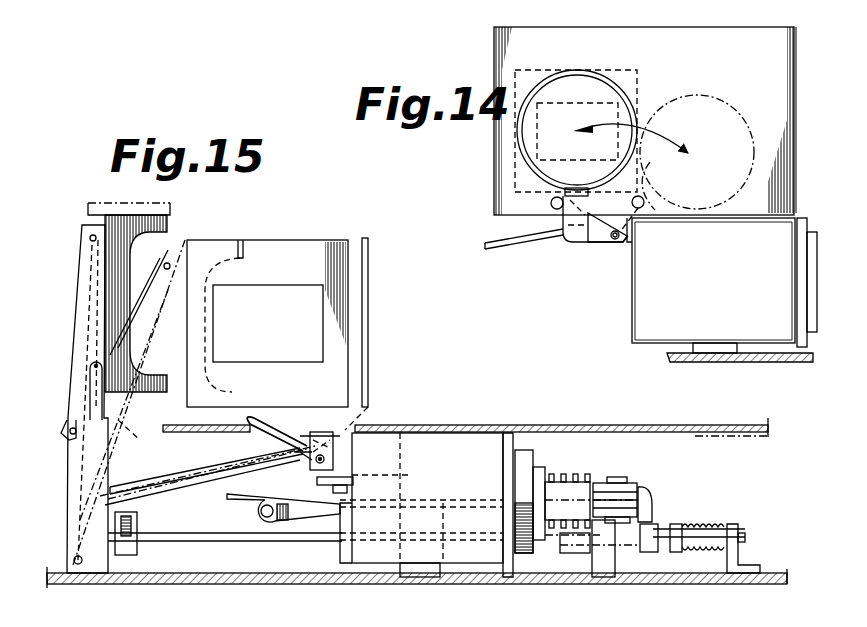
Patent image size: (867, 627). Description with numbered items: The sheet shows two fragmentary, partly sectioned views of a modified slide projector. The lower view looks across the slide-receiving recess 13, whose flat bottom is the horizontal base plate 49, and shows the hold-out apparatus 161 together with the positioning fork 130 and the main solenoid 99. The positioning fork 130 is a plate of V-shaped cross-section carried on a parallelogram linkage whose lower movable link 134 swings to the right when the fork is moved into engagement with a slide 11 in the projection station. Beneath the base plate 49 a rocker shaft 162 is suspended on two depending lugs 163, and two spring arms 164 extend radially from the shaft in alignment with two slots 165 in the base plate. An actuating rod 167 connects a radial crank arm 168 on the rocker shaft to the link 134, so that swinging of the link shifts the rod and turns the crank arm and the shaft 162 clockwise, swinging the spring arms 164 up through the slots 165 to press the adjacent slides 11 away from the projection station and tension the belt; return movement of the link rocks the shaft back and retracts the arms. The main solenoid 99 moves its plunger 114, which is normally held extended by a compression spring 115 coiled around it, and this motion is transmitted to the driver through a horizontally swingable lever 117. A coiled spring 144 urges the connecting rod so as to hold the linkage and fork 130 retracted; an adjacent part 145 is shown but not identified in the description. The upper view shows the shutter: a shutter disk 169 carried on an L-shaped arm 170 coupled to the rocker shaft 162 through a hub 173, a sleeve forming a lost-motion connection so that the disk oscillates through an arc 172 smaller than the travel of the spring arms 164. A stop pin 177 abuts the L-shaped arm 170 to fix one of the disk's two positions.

In FIG. 15, the slide-receiving recess 13 is at (167, 202).
In FIG. 15, the positioning fork 130 is at (230, 236).
In FIG. 15, the slide 11 is at (258, 242).
In FIG. 15, the horizontal base plate 49 is at (530, 428).
In FIG. 15, the spring arms 164 is at (262, 418).
In FIG. 14, the spring arms 164 is at (640, 189).
In FIG. 15, the slots 165 is at (246, 438).
In FIG. 15, the actuating rod 167 is at (147, 477).
In FIG. 15, the third link 134 is at (118, 448).
In FIG. 15, the depending lugs 163 is at (334, 464).
In FIG. 15, the radial crank arm 168 is at (310, 455).
In FIG. 15, the hold-out apparatus 161 is at (323, 483).
In FIG. 15, the main solenoid 99 is at (462, 483).
In FIG. 14, the main solenoid 99 is at (720, 299).
In FIG. 15, the compression spring 115 is at (568, 481).
In FIG. 15, the plunger 114 is at (578, 496).
In FIG. 15, the horizontally swingable lever 117 is at (628, 500).
In FIG. 15, the collar 145 is at (663, 524).
In FIG. 15, the coiled spring 144 is at (688, 528).
In FIG. 14, the shutter disk 169 is at (586, 73).
In FIG. 14, the arc of oscillation 172 is at (668, 133).
In FIG. 14, the stop pin 177 is at (551, 205).
In FIG. 14, the L-shaped arm 170 is at (572, 244).
In FIG. 14, the hub 173 is at (612, 244).
In FIG. 14, the rocker shaft 162 is at (630, 228).